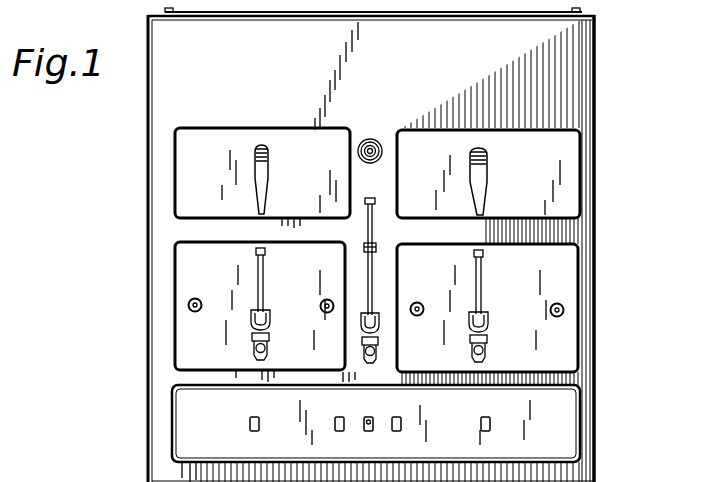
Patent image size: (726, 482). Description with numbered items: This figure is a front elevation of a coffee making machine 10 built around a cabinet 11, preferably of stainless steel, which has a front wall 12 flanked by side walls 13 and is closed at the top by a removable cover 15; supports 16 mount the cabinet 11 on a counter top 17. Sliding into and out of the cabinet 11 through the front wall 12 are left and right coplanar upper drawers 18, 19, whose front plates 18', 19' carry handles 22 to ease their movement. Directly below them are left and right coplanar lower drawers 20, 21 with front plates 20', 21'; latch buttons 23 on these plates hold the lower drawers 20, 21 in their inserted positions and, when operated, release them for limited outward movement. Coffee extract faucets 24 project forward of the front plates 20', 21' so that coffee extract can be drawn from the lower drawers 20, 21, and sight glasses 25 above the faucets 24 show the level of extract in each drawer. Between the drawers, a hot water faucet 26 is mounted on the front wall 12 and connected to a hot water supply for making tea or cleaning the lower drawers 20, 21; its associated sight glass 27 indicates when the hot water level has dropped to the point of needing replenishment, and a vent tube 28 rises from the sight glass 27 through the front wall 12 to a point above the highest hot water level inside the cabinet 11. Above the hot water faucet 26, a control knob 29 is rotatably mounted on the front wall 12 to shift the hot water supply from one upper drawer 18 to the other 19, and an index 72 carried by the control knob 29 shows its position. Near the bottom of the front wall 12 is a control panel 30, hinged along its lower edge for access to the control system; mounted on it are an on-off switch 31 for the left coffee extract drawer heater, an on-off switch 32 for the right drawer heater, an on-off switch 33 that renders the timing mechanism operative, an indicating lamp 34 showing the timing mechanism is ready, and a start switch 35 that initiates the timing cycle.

The coffee making machine 10 is at (636, 52).
The cabinet 11 is at (597, 18).
The front wall 12 is at (298, 65).
The side walls 13 is at (146, 156).
The removable cover 15 is at (170, 9).
The supports 16 is at (189, 462).
The counter top 17 is at (403, 475).
The left upper drawer 18 is at (262, 143).
The front plate 18' is at (266, 181).
The right upper drawer 19 is at (488, 154).
The front plate 19' is at (494, 185).
The left lower drawer 20 is at (228, 296).
The front plate 20' is at (262, 304).
The right lower drawer 21 is at (487, 299).
The front plate 21' is at (485, 306).
The handles 22 is at (270, 153).
The latch buttons 23 is at (202, 305).
The coffee extract faucets 24 is at (251, 338).
The sight glasses 25 is at (264, 282).
The hot water faucet 26 is at (380, 350).
The sight glass 27 is at (368, 270).
The vent tube 28 is at (372, 206).
The control knob 29 is at (374, 142).
The index 72 is at (364, 143).
The control panel 30 is at (566, 421).
The on-off switch 31 is at (250, 420).
The on-off switch 32 is at (490, 422).
The on-off switch 33 is at (335, 420).
The indicating lamp 34 is at (368, 418).
The start switch 35 is at (398, 420).